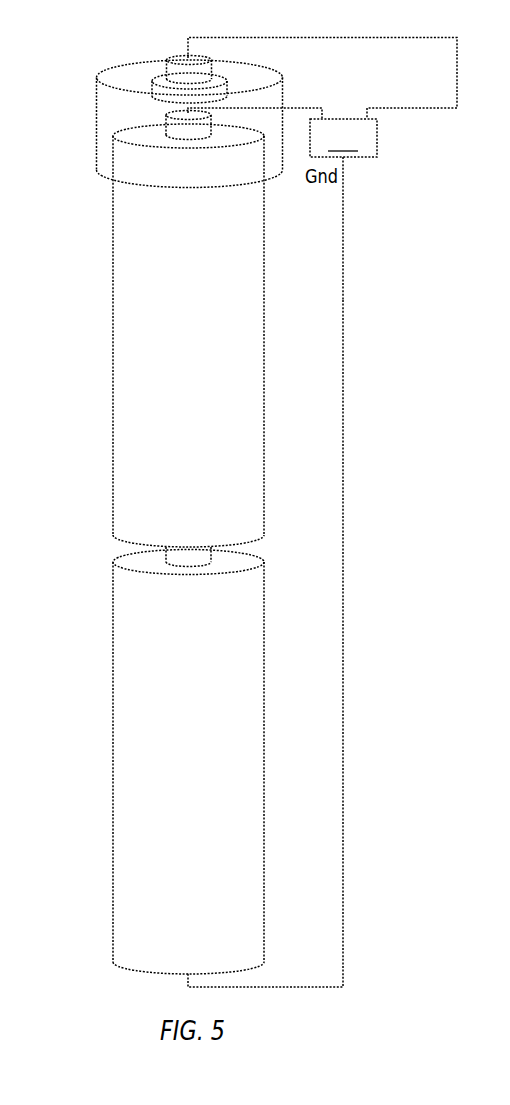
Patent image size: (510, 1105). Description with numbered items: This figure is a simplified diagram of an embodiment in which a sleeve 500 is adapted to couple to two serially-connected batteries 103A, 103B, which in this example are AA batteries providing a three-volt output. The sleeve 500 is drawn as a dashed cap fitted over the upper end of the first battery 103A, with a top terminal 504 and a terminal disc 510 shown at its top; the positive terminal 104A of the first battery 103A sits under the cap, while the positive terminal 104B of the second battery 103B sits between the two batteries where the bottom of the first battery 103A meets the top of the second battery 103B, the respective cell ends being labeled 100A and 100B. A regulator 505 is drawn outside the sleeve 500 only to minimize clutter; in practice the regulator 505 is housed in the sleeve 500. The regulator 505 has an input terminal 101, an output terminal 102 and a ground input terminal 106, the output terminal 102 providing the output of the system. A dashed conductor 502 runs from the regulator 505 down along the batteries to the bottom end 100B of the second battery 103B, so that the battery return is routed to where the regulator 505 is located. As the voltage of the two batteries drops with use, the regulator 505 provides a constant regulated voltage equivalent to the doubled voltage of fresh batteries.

The sleeve 500 is at (95, 125).
The top terminal 504 is at (181, 57).
The terminal disc 510 is at (230, 92).
The input terminal 101 is at (313, 105).
The output terminal 102 is at (374, 105).
The regulator 505 is at (343, 138).
The ground input terminal 106 is at (346, 162).
The return conductor 502 is at (344, 543).
The positive terminal of first cell 104A is at (173, 128).
The battery 103A is at (113, 355).
The positive terminal of second cell 104B is at (213, 553).
The first battery cell 100A is at (160, 553).
The battery 103B is at (113, 757).
The second battery cell 100B is at (177, 975).